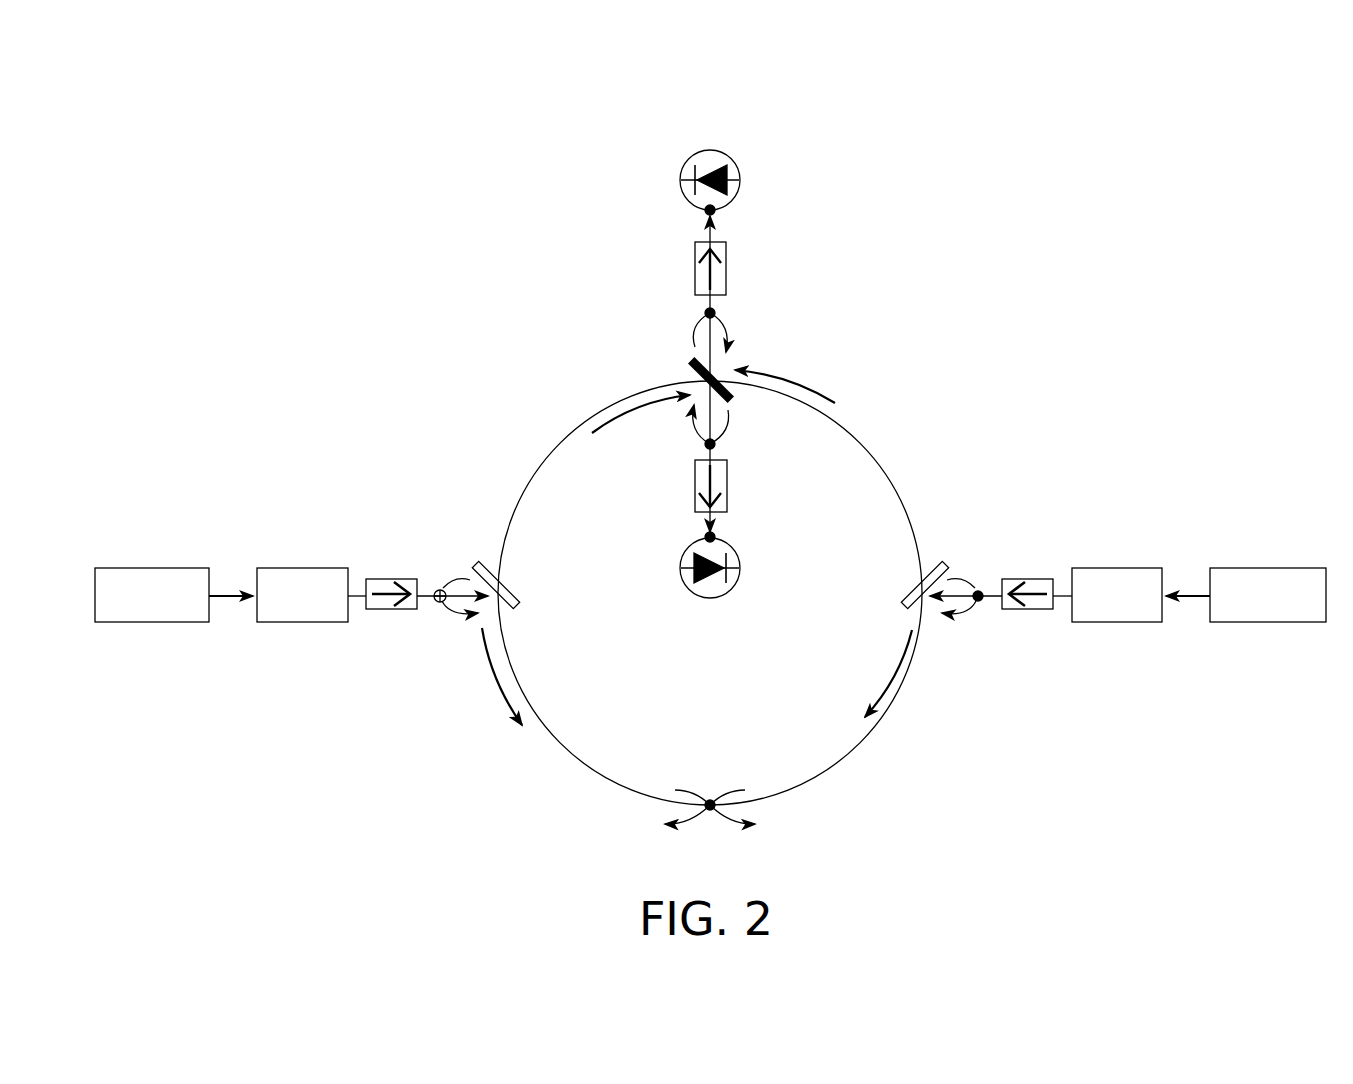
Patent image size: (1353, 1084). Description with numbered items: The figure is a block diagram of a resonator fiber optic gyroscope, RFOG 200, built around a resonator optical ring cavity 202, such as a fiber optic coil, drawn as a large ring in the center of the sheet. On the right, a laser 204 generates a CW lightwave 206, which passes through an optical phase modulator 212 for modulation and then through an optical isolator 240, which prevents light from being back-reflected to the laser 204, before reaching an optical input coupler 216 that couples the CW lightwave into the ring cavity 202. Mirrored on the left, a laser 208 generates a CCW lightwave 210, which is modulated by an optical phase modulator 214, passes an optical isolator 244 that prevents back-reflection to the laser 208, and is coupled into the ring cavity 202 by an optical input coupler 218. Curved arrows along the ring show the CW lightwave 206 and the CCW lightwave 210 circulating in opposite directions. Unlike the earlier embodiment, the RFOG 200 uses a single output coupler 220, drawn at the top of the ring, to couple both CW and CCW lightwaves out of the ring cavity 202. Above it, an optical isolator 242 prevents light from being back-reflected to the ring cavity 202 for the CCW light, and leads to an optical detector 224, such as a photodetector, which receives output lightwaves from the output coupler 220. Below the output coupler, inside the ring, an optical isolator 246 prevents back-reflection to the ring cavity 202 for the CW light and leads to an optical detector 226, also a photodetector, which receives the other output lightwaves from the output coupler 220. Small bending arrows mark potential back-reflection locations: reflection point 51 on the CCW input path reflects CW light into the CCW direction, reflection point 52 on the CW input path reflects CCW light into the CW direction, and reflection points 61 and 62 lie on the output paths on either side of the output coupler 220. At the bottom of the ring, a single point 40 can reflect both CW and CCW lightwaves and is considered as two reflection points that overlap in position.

The RFOG 200 is at (965, 186).
The resonator optical ring cavity 202 is at (880, 458).
The laser 204 is at (1247, 622).
The CW lightwave 206 is at (594, 426).
The laser 208 is at (172, 622).
The CCW lightwave 210 is at (798, 382).
The optical phase modulator 212 is at (1092, 622).
The optical phase modulator 214 is at (328, 622).
The optical input coupler 216 is at (945, 565).
The optical input coupler 218 is at (477, 566).
The output coupler 220 is at (700, 367).
The optical detector 224 is at (740, 168).
The optical detector 226 is at (728, 597).
The optical isolator 240 is at (1013, 610).
The optical isolator 242 is at (726, 273).
The optical isolator 244 is at (403, 610).
The optical isolator 246 is at (695, 502).
The reflection point 40 is at (708, 800).
The reflection point 51 is at (438, 602).
The reflection point 52 is at (980, 602).
The reflection point 61 is at (714, 446).
The reflection point 62 is at (714, 312).